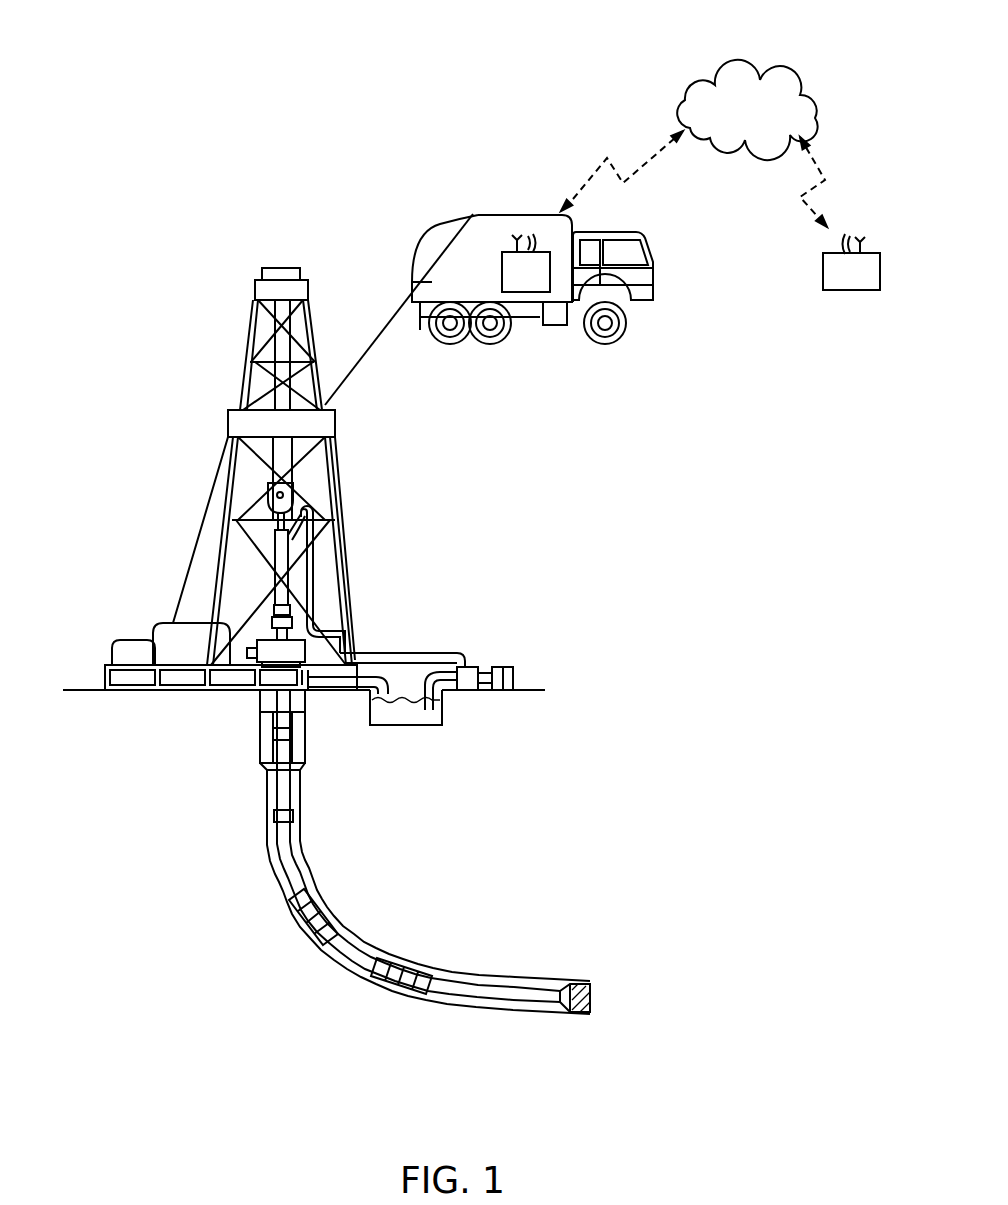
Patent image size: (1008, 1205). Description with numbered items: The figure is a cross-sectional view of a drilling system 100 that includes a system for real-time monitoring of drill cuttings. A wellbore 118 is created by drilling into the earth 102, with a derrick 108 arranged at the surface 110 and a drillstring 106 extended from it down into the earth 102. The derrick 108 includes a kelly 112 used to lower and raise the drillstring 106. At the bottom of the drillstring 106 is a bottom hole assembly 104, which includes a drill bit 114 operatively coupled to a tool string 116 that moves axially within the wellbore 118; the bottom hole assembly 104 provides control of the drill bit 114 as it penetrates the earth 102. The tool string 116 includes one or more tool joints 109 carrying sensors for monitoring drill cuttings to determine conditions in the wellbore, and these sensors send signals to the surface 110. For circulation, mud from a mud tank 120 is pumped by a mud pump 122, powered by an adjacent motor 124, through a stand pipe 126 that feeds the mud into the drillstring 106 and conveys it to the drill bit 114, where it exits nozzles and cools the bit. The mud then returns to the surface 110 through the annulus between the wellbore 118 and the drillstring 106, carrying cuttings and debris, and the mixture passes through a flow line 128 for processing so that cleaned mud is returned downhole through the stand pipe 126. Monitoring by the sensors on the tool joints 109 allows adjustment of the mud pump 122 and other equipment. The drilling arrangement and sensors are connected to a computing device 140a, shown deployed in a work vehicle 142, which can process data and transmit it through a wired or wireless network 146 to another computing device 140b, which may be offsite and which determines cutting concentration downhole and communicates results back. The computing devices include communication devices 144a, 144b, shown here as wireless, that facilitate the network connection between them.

The drilling system 100 is at (514, 470).
The earth 102 is at (87, 749).
The bottom hole assembly 104 is at (537, 991).
The drillstring 106 is at (285, 840).
The derrick 108 is at (232, 485).
The tool joints 109 is at (327, 910).
The surface 110 is at (73, 690).
The kelly 112 is at (297, 497).
The drill bit 114 is at (592, 990).
The tool string 116 is at (448, 929).
The wellbore 118 is at (263, 800).
The mud tank 120 is at (410, 717).
The mud pump 122 is at (473, 670).
The motor 124 is at (513, 678).
The stand pipe 126 is at (320, 578).
The flow line 128 is at (383, 672).
The computing device 140a is at (503, 272).
The other computing device 140b is at (847, 293).
The work vehicle 142 is at (655, 308).
The communication device 144a is at (528, 247).
The communication device 144b is at (858, 238).
The network 146 is at (783, 90).